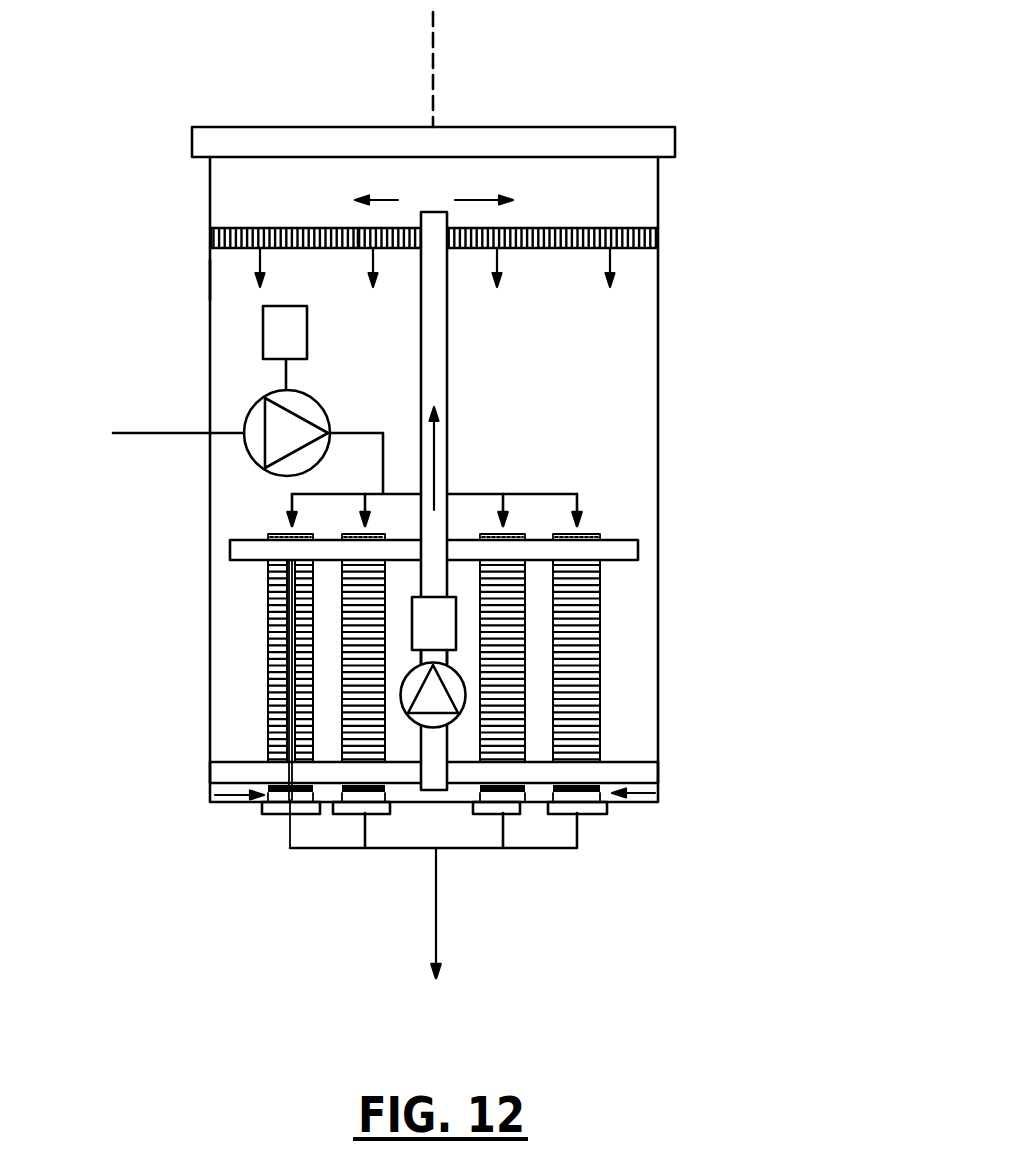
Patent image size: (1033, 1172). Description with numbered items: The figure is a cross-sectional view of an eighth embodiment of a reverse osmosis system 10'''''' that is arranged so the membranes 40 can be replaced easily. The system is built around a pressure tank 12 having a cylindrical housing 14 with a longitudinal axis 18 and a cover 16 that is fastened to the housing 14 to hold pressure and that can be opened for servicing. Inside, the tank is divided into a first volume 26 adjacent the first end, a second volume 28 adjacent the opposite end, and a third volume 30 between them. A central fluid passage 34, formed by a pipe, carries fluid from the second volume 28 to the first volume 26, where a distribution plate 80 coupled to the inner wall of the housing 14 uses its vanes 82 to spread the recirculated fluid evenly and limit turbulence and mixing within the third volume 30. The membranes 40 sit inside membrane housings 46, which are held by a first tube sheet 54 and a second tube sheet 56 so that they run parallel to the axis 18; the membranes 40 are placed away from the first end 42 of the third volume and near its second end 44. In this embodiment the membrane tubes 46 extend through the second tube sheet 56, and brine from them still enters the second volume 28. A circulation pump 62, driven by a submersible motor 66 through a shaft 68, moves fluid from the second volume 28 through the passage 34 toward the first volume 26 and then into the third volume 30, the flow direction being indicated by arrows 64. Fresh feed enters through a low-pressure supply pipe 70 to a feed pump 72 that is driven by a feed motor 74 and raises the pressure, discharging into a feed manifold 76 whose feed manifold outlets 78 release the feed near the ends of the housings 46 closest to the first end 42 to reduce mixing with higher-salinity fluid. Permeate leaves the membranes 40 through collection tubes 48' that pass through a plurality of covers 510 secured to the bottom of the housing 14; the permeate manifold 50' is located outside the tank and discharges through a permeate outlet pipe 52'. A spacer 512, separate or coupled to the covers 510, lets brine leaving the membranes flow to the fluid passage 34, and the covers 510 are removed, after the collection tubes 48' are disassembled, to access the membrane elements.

The reverse osmosis system 10'''''' is at (364, 89).
The pressure tank 12 is at (192, 176).
The housing 14 is at (210, 278).
The cover 16 is at (234, 142).
The longitudinal axis 18 is at (437, 40).
The first volume 26 is at (521, 168).
The second volume 28 is at (195, 794).
The third volume 30 is at (636, 334).
The fluid passage 34 is at (450, 372).
The membranes 40 is at (275, 595).
The first end 42 is at (642, 277).
The second end 44 is at (635, 741).
The membrane housing 46 is at (600, 587).
The collection tubes 48' is at (425, 735).
The permeate manifold 50' is at (433, 886).
The permeate outlet pipe 52' is at (483, 913).
The first tube sheet 54 is at (627, 548).
The second tube sheet 56 is at (632, 773).
The circulation pump 62 is at (463, 700).
The arrows 64 is at (396, 200).
The motor 66 is at (412, 610).
The shaft 68 is at (425, 658).
The low-pressure supply pipe 70 is at (148, 433).
The feed pump 72 is at (318, 400).
The feed motor 74 is at (262, 318).
The feed manifold 76 is at (378, 433).
The feed manifold outlets 78 is at (288, 503).
The distribution plate 80 is at (298, 236).
The vanes 82 is at (358, 242).
The covers 510 is at (345, 812).
The spacer 512 is at (270, 812).